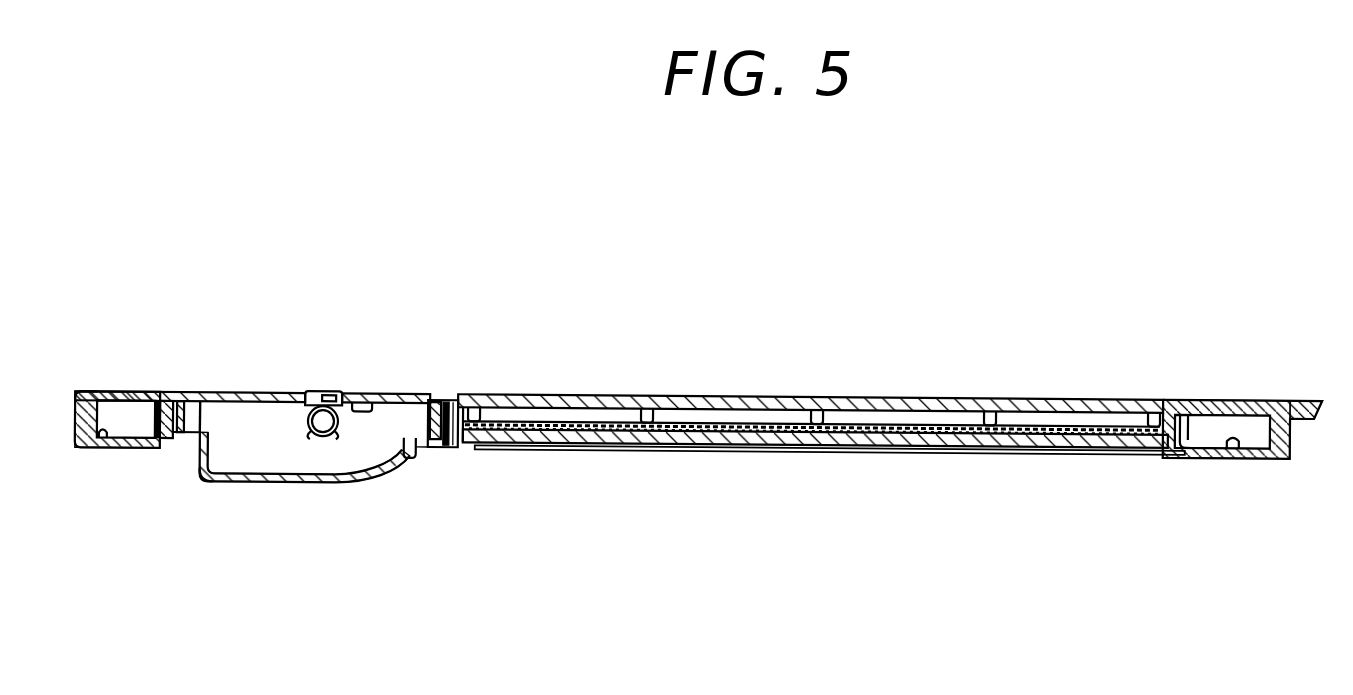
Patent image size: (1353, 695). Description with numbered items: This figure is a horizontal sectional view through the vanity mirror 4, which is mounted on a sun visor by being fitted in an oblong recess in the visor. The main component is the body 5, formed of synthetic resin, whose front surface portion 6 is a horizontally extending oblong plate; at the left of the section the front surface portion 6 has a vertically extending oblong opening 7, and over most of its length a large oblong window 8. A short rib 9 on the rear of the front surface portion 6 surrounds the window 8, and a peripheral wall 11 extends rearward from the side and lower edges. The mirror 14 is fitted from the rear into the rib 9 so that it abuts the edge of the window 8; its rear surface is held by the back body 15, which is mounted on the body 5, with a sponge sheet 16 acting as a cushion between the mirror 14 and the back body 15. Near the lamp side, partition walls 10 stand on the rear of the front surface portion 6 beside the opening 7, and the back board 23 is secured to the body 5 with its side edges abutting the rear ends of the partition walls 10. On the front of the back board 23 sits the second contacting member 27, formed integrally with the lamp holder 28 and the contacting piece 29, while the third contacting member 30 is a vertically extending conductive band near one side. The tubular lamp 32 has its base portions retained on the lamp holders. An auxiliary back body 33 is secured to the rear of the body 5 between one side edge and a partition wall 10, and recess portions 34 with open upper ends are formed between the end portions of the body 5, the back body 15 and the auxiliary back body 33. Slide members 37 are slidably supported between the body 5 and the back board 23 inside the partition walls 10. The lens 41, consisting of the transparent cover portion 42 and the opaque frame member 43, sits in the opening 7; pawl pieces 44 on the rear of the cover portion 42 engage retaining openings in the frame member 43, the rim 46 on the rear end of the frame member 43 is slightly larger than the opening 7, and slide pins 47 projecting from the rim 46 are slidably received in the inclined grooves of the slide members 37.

The vanity mirror 4 is at (266, 238).
The body 5 is at (118, 456).
The front surface portion 6 is at (1208, 454).
The opening 7 is at (242, 479).
The window 8 is at (1172, 452).
The rib 9 is at (1190, 428).
The partition wall 10 is at (176, 404).
The peripheral wall 11 is at (82, 395).
The mirror 14 is at (779, 445).
The back body 15 is at (710, 396).
The sponge sheet 16 is at (812, 411).
The back board 23 is at (348, 396).
The second contacting member 27 is at (350, 448).
The lamp holder 28 is at (316, 443).
The contacting piece 29 is at (318, 396).
The third contacting member 30 is at (380, 396).
The tubular lamp 32 is at (326, 434).
The auxiliary back body 33 is at (140, 396).
The recess portion 34 is at (101, 446).
The slide member 37 is at (168, 456).
The lens 41 is at (300, 558).
The cover portion 42 is at (266, 480).
The frame member 43 is at (224, 488).
The pawl piece 44 is at (208, 486).
The rim 46 is at (208, 404).
The slide pin 47 is at (186, 406).